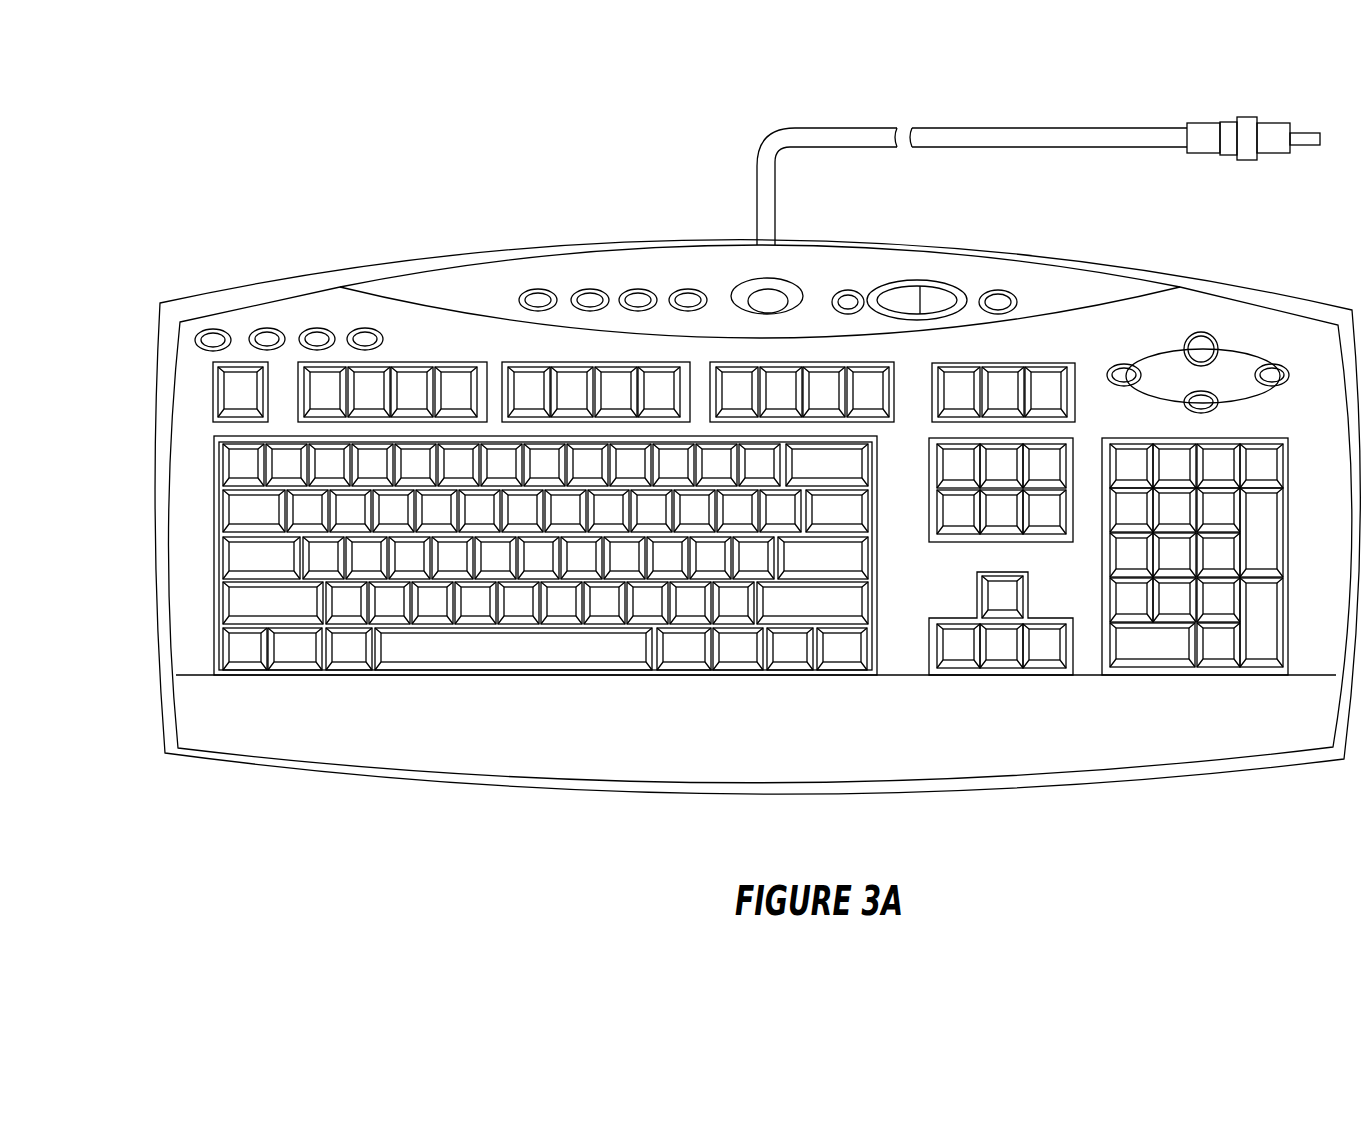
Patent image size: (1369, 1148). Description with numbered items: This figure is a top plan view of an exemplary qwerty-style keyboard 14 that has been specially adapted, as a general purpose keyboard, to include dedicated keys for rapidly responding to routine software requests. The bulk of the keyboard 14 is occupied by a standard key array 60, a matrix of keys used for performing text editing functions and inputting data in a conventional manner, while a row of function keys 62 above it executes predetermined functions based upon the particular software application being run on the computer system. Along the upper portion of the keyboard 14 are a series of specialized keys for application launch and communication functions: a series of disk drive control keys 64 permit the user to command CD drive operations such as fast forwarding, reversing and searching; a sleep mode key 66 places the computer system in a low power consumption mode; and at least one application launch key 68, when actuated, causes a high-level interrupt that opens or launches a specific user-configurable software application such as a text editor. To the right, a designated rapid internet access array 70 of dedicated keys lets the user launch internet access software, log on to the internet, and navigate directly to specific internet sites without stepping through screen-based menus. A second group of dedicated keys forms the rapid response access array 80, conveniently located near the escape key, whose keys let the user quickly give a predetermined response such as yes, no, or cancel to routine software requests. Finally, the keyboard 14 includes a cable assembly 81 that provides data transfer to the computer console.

The keyboard 14 is at (726, 455).
The standard key array 60 is at (190, 509).
The function keys 62 is at (503, 356).
The disk drive control keys 64 is at (687, 295).
The sleep mode key 66 is at (764, 300).
The application launch key 68 is at (998, 300).
The rapid internet access array 70 is at (1240, 338).
The rapid response access array 80 is at (358, 333).
The cable assembly 81 is at (1072, 145).